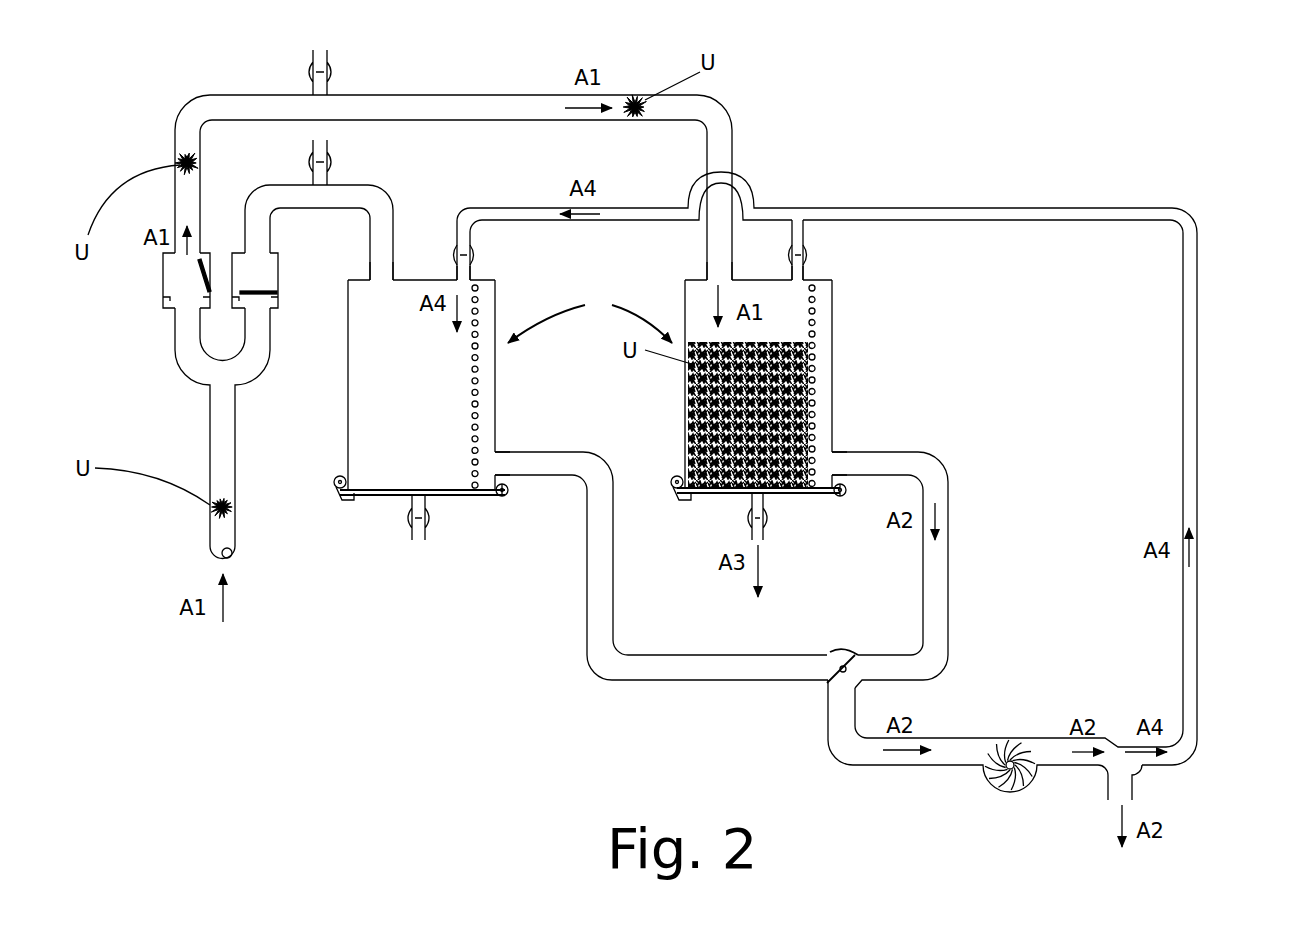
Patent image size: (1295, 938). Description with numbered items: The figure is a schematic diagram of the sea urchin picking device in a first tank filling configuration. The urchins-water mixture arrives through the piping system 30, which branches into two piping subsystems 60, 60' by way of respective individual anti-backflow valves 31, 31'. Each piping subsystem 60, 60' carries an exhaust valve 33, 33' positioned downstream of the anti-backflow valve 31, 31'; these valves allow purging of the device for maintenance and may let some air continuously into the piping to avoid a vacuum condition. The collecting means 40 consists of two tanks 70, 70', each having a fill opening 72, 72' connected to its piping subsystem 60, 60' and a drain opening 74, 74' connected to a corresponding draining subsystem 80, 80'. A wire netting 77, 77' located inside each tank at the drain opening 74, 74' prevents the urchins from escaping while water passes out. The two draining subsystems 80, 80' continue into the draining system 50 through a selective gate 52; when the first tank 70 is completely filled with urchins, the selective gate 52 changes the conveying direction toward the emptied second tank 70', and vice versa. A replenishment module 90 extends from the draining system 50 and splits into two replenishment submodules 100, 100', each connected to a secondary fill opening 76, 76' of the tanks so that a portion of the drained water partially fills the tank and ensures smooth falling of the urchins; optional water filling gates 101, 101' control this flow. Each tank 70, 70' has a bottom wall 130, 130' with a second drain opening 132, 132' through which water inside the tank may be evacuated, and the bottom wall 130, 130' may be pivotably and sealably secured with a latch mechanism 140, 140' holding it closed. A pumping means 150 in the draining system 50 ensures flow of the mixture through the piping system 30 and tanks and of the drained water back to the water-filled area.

The piping system 30 is at (210, 545).
The anti-backflow valve 31 is at (277, 303).
The anti-backflow valve 31' is at (146, 309).
The exhaust valve 33 is at (369, 157).
The exhaust valve 33' is at (370, 64).
The collecting means 40 is at (590, 316).
The draining system 50 is at (1105, 780).
The selective gate 52 is at (832, 652).
The piping subsystem 60 is at (309, 210).
The piping subsystem 60' is at (453, 161).
The tank 70 is at (468, 385).
The tank 70' is at (828, 384).
The fill opening 72 is at (339, 255).
The fill opening 72' is at (676, 255).
The drain opening 74 is at (545, 432).
The drain opening 74' is at (885, 432).
The secondary fill opening 76 is at (496, 253).
The secondary fill opening 76' is at (854, 267).
The wire netting 77 is at (529, 364).
The wire netting 77' is at (872, 386).
The draining subsystem 80 is at (660, 566).
The draining subsystem 80' is at (926, 570).
The replenishment module 90 is at (1198, 442).
The replenishment submodule 100 is at (827, 222).
The replenishment submodule 100' is at (851, 208).
The water filling gate 101 is at (442, 220).
The water filling gate 101' is at (891, 246).
The bottom wall 130 is at (422, 547).
The bottom wall 130' is at (786, 556).
The second drain opening 132 is at (402, 484).
The second drain opening 132' is at (785, 546).
The latch mechanism 140 is at (380, 504).
The latch mechanism 140' is at (731, 516).
The pumping means 150 is at (1043, 725).